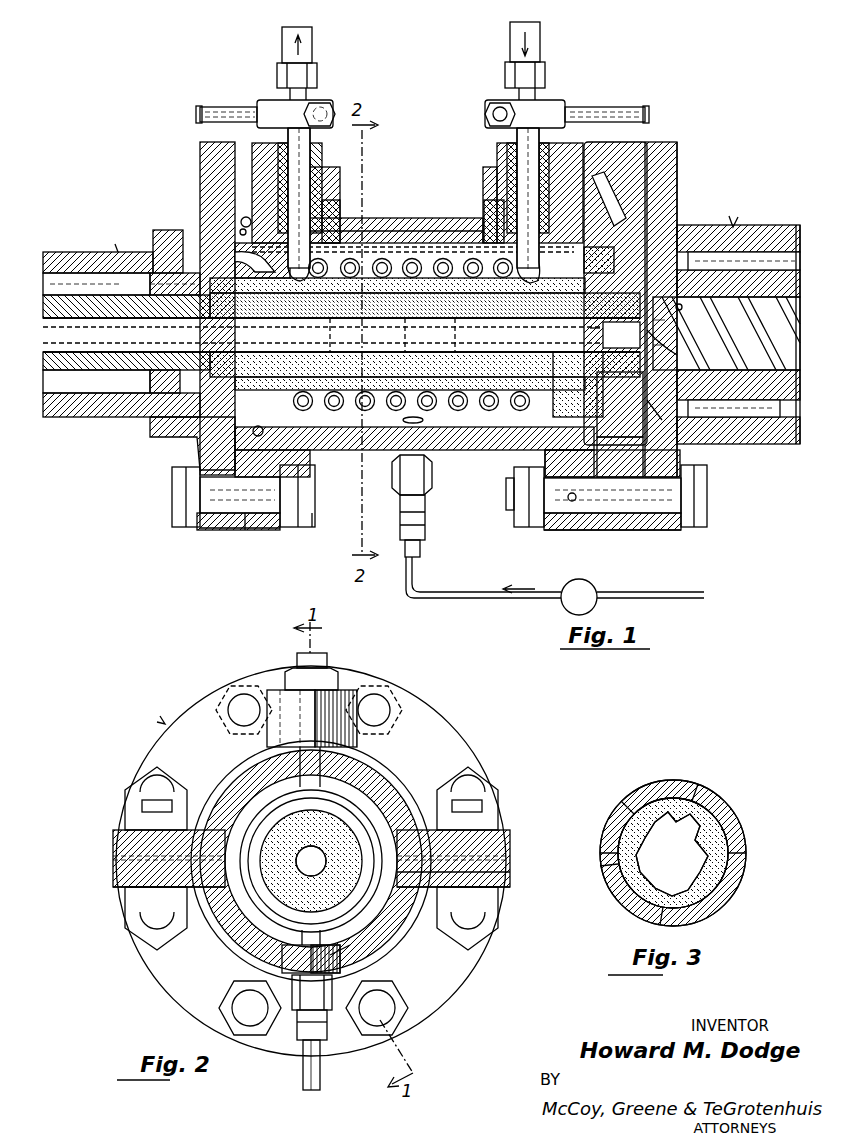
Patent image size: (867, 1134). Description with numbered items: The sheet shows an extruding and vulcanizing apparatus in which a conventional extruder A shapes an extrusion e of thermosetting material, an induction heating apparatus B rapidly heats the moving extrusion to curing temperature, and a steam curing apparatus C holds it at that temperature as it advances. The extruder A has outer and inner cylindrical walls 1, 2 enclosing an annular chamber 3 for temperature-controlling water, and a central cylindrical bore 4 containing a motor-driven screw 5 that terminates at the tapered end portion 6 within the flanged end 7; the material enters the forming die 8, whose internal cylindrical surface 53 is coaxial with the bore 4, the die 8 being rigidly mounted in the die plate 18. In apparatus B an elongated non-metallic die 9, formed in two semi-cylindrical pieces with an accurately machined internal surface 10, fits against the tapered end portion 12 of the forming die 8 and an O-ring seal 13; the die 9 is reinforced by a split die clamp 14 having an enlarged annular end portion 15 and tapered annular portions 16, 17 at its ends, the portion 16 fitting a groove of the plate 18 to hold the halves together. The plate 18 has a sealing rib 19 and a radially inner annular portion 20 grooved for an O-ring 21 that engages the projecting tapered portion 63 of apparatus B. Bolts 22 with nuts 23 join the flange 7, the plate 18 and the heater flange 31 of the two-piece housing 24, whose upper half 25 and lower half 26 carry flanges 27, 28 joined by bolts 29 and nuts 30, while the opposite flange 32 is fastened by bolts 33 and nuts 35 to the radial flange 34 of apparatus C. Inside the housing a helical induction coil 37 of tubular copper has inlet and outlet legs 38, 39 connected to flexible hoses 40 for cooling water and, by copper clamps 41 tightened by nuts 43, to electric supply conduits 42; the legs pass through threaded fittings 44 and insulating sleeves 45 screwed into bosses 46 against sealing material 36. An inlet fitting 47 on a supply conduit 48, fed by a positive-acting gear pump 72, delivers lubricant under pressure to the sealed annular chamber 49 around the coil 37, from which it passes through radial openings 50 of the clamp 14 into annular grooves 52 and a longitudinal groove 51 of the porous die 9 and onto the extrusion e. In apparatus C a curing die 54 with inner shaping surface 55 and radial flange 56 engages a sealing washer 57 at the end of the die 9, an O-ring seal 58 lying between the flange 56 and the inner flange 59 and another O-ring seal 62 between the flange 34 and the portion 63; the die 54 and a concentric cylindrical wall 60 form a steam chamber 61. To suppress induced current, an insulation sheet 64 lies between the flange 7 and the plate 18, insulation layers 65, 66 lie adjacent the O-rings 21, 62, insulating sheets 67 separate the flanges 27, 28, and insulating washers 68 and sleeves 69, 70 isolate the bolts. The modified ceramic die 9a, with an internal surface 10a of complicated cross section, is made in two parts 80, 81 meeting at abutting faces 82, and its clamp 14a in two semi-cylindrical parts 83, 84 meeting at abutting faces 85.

In FIG. 1, the outer cylindrical wall 1 is at (792, 225).
In FIG. 1, the inner cylindrical wall 2 is at (770, 227).
In FIG. 1, the annular chamber 3 is at (712, 253).
In FIG. 1, the central cylindrical bore 4 is at (718, 370).
In FIG. 1, the motor-driven screw 5 is at (738, 335).
In FIG. 1, the tapered end portion 6 is at (686, 300).
In FIG. 1, the flanged end 7 is at (678, 165).
In FIG. 1, the forming die 8 is at (652, 365).
In FIG. 1, the non-metallic die 9 is at (275, 346).
In FIG. 2, the non-metallic die 9 is at (328, 863).
In FIG. 3, the ceramic die 9a is at (640, 815).
In FIG. 1, the internally cylindrical surface 10 is at (341, 332).
In FIG. 3, the internal surface 10a is at (672, 854).
In FIG. 1, the end portion 12 is at (425, 298).
In FIG. 1, the elastomeric O-ring seal 13 is at (612, 257).
In FIG. 1, the die clamp 14 is at (290, 395).
In FIG. 2, the die clamp 14 is at (275, 822).
In FIG. 3, the clamp 14a is at (690, 793).
In FIG. 1, the enlarged annular end portion 15 is at (553, 416).
In FIG. 1, the tapered annular portion 16 is at (612, 203).
In FIG. 1, the tapered annular portion 17 is at (262, 260).
In FIG. 1, the die plate 18 is at (602, 142).
In FIG. 1, the annular sealing rib 19 is at (660, 421).
In FIG. 1, the radially inner annular portion 20 is at (620, 404).
In FIG. 1, the outer elastomeric O-ring 21 is at (620, 329).
In FIG. 1, the bolts 22 is at (708, 500).
In FIG. 2, the bolts 22 is at (220, 706).
In FIG. 1, the nuts 23 is at (532, 530).
In FIG. 2, the nuts 23 is at (140, 786).
In FIG. 1, the two-piece housing 24 is at (431, 193).
In FIG. 2, the upper half 25 is at (375, 792).
In FIG. 1, the lower half 26 is at (470, 451).
In FIG. 2, the lower half 26 is at (240, 926).
In FIG. 2, the horizontal flanges 27 is at (115, 833).
In FIG. 2, the flanges 28 is at (113, 884).
In FIG. 2, the bolts 29 is at (125, 911).
In FIG. 2, the nuts 30 is at (140, 802).
In FIG. 1, the radial flange 31 is at (570, 531).
In FIG. 2, the radial flange 31 is at (445, 726).
In FIG. 1, the radial flange 32 is at (276, 531).
In FIG. 1, the bolts 33 is at (170, 493).
In FIG. 1, the radial flange 34 is at (200, 152).
In FIG. 1, the nuts 35 is at (313, 528).
In FIG. 1, the sealing material 36 is at (333, 204).
In FIG. 1, the helical induction coil 37 is at (385, 218).
In FIG. 2, the helical induction coil 37 is at (308, 949).
In FIG. 1, the inlet leg 38 is at (541, 95).
In FIG. 2, the inlet leg 38 is at (335, 696).
In FIG. 1, the outlet leg 39 is at (312, 95).
In FIG. 1, the flexible hoses 40 is at (280, 40).
In FIG. 1, the copper clamps 41 is at (280, 100).
In FIG. 1, the electric supply conduits 42 is at (215, 107).
In FIG. 1, the nuts 43 is at (336, 104).
In FIG. 1, the threaded fittings 44 is at (332, 167).
In FIG. 2, the threaded fittings 44 is at (285, 676).
In FIG. 1, the electrical insulating sleeves 45 is at (314, 152).
In FIG. 1, the bosses 46 is at (330, 205).
In FIG. 2, the bosses 46 is at (270, 702).
In FIG. 1, the inlet fitting 47 is at (426, 510).
In FIG. 2, the inlet fitting 47 is at (294, 1021).
In FIG. 1, the supply conduit 48 is at (520, 598).
In FIG. 2, the supply conduit 48 is at (322, 1080).
In FIG. 1, the sealed annular chamber 49 is at (355, 418).
In FIG. 2, the sealed annular chamber 49 is at (400, 941).
In FIG. 1, the radial openings 50 is at (309, 268).
In FIG. 1, the longitudinal groove 51 is at (413, 251).
In FIG. 2, the longitudinal groove 51 is at (305, 797).
In FIG. 1, the annular grooves 52 is at (385, 335).
In FIG. 2, the annular grooves 52 is at (318, 926).
In FIG. 1, the internal cylindrical surface 53 is at (621, 335).
In FIG. 1, the curing die 54 is at (98, 273).
In FIG. 1, the inner shaping surface 55 is at (110, 331).
In FIG. 1, the radial flange 56 is at (210, 300).
In FIG. 1, the sealing washer 57 is at (126, 305).
In FIG. 1, the O-ring seal 58 is at (177, 277).
In FIG. 1, the annular inner flange 59 is at (119, 284).
In FIG. 1, the concentric cylindrical wall 60 is at (75, 372).
In FIG. 1, the annular fluid chamber 61 is at (93, 277).
In FIG. 1, the O-ring seal 62 is at (242, 220).
In FIG. 1, the projecting tapered portion 63 is at (590, 497).
In FIG. 1, the electrical insulation sheet 64 is at (678, 184).
In FIG. 1, the insulation layer 65 is at (596, 186).
In FIG. 1, the insulation layer 66 is at (242, 228).
In FIG. 2, the electric insulating sheets 67 is at (113, 857).
In FIG. 1, the insulating washers 68 is at (198, 529).
In FIG. 1, the insulating sleeves 69 is at (240, 531).
In FIG. 1, the insulating sleeves 70 is at (612, 531).
In FIG. 1, the pump 72 is at (596, 591).
In FIG. 2, the die part 80 is at (512, 872).
In FIG. 3, the die part 80 is at (600, 865).
In FIG. 3, the die part 81 is at (730, 845).
In FIG. 3, the abutting faces 82 is at (690, 800).
In FIG. 3, the semi-cylindrical part 83 is at (728, 808).
In FIG. 3, the semi-cylindrical part 84 is at (622, 900).
In FIG. 3, the abutting faces 85 is at (608, 850).
In FIG. 1, the extruder A is at (733, 225).
In FIG. 2, the induction heating apparatus B is at (165, 724).
In FIG. 1, the steam curing apparatus C is at (118, 252).
In FIG. 1, the extrusion e is at (590, 326).